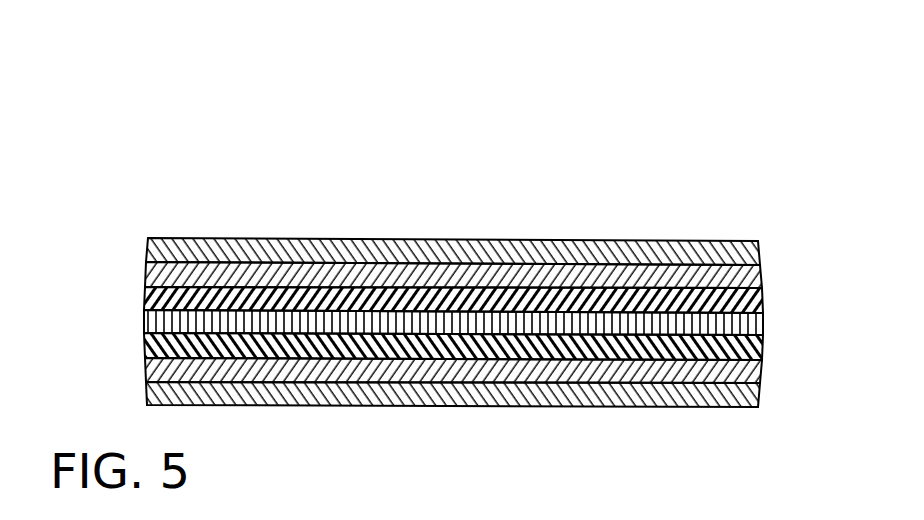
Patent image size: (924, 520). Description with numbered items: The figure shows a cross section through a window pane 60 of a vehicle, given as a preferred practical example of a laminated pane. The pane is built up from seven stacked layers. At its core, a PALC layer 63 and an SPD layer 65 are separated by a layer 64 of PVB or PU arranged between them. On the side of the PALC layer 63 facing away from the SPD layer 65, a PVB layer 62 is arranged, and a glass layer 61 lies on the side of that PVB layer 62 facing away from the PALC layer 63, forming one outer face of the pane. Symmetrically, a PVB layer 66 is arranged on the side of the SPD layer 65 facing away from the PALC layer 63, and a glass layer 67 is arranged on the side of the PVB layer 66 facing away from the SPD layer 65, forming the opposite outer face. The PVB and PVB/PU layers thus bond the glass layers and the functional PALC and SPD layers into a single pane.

The window pane 60 is at (453, 215).
The glass layer 61 is at (170, 250).
The PVB layer 62 is at (738, 275).
The PALC layer 63 is at (168, 300).
The layer of PVB or PU 64 is at (737, 323).
The SPD layer 65 is at (168, 347).
The PVB layer 66 is at (738, 373).
The glass layer 67 is at (167, 393).